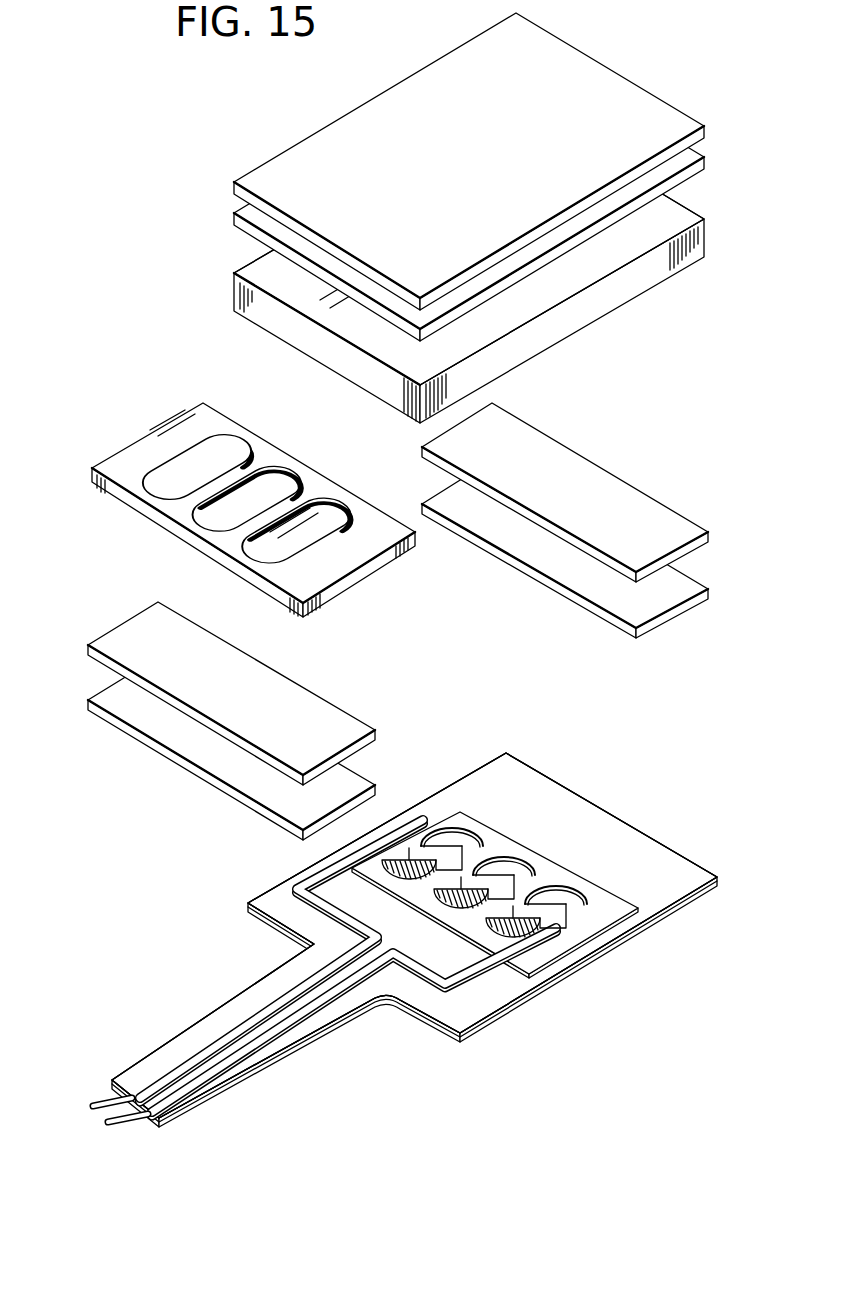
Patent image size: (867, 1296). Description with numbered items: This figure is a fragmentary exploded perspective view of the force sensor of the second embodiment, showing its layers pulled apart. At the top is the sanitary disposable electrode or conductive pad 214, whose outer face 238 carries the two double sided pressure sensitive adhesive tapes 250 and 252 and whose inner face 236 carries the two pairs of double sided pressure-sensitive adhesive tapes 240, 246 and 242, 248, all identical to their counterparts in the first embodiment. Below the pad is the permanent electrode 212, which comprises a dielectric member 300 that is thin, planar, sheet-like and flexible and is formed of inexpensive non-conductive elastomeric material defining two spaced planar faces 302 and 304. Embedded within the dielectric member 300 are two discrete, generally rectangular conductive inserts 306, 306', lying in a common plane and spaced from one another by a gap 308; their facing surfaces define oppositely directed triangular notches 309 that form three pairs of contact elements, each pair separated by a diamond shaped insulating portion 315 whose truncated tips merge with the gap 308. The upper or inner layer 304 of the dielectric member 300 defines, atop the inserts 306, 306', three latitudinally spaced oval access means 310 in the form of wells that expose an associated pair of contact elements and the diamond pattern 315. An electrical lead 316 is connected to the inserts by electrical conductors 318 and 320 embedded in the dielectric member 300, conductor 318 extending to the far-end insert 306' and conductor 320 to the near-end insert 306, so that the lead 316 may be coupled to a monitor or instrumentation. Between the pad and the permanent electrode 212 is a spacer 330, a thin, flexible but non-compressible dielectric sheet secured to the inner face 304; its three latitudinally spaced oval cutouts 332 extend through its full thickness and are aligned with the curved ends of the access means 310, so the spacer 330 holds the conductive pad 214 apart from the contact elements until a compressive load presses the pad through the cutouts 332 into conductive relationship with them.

The permanent electrode 212 is at (240, 897).
The disposable electrode 214 is at (228, 289).
The inner face 236 is at (245, 320).
The outer face 238 is at (245, 277).
The double sided pressure-sensitive adhesive tape 240 is at (88, 650).
The double sided pressure-sensitive adhesive tape 242 is at (628, 480).
The double sided pressure-sensitive adhesive tape 246 is at (88, 705).
The double sided pressure-sensitive adhesive tape 248 is at (708, 590).
The double sided pressure sensitive adhesive tape 250 is at (234, 223).
The double sided pressure sensitive adhesive tape 252 is at (234, 188).
The dielectric member 300 is at (283, 935).
The planar face 302 is at (629, 939).
The inner face 304 is at (638, 856).
The conductive insert 306 is at (473, 953).
The conductive insert 306' is at (533, 934).
The gap 308 is at (486, 892).
The triangular notch 309 is at (470, 865).
The access means 310 is at (555, 880).
The diamond shaped portion 315 is at (478, 892).
The electrical lead 316 is at (80, 1116).
The electrical conductor 318 is at (314, 866).
The electrical conductor 320 is at (180, 1082).
The spacer 330 is at (140, 442).
The oval cutout 332 is at (335, 512).